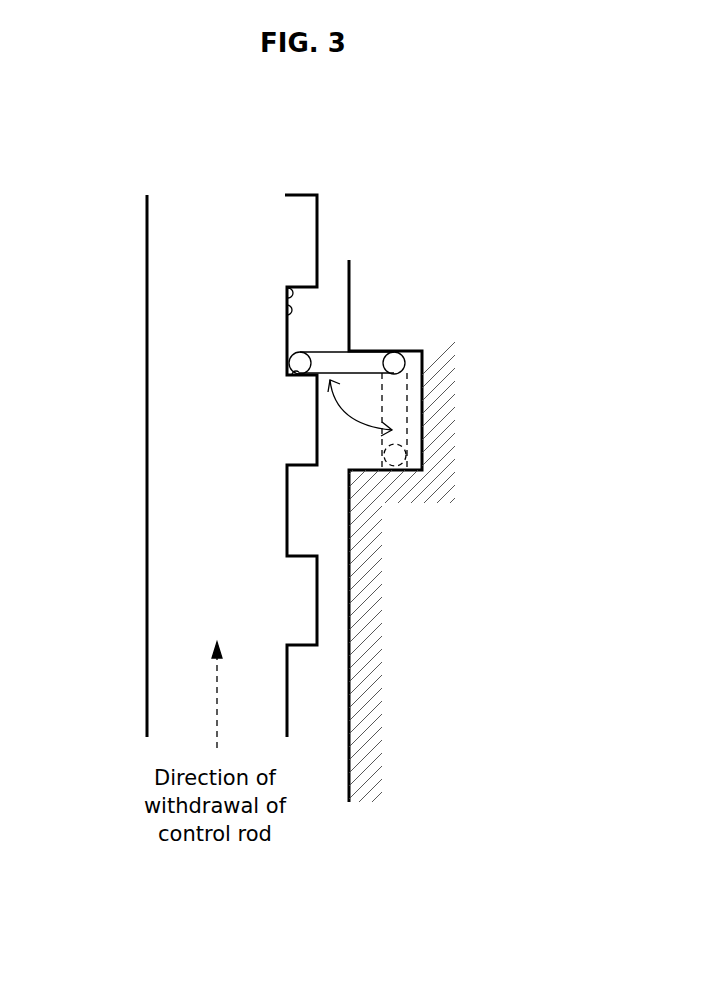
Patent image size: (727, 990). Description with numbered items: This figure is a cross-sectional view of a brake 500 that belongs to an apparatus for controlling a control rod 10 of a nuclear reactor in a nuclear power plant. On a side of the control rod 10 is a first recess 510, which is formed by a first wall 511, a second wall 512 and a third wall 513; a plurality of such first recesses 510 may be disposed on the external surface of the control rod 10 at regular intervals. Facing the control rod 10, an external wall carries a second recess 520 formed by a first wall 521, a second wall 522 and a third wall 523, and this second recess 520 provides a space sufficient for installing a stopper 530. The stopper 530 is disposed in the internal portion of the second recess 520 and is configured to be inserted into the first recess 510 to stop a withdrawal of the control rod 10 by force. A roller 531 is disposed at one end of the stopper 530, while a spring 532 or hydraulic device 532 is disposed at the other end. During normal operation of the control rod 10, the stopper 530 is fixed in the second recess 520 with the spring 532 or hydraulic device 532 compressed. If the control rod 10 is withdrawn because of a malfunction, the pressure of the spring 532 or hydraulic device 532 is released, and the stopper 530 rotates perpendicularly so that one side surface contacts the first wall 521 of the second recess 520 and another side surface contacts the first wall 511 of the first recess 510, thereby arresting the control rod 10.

The control rod 10 is at (147, 554).
The brake 500 is at (346, 133).
The first recess 510 is at (258, 466).
The first wall 511 is at (296, 380).
The second wall 512 is at (288, 305).
The third wall 513 is at (289, 292).
The second recess 520 is at (363, 521).
The first wall 521 is at (384, 350).
The second wall 522 is at (415, 451).
The third wall 523 is at (363, 463).
The stopper 530 is at (365, 320).
The roller 531 is at (290, 358).
The spring or hydraulic device 532 is at (398, 361).